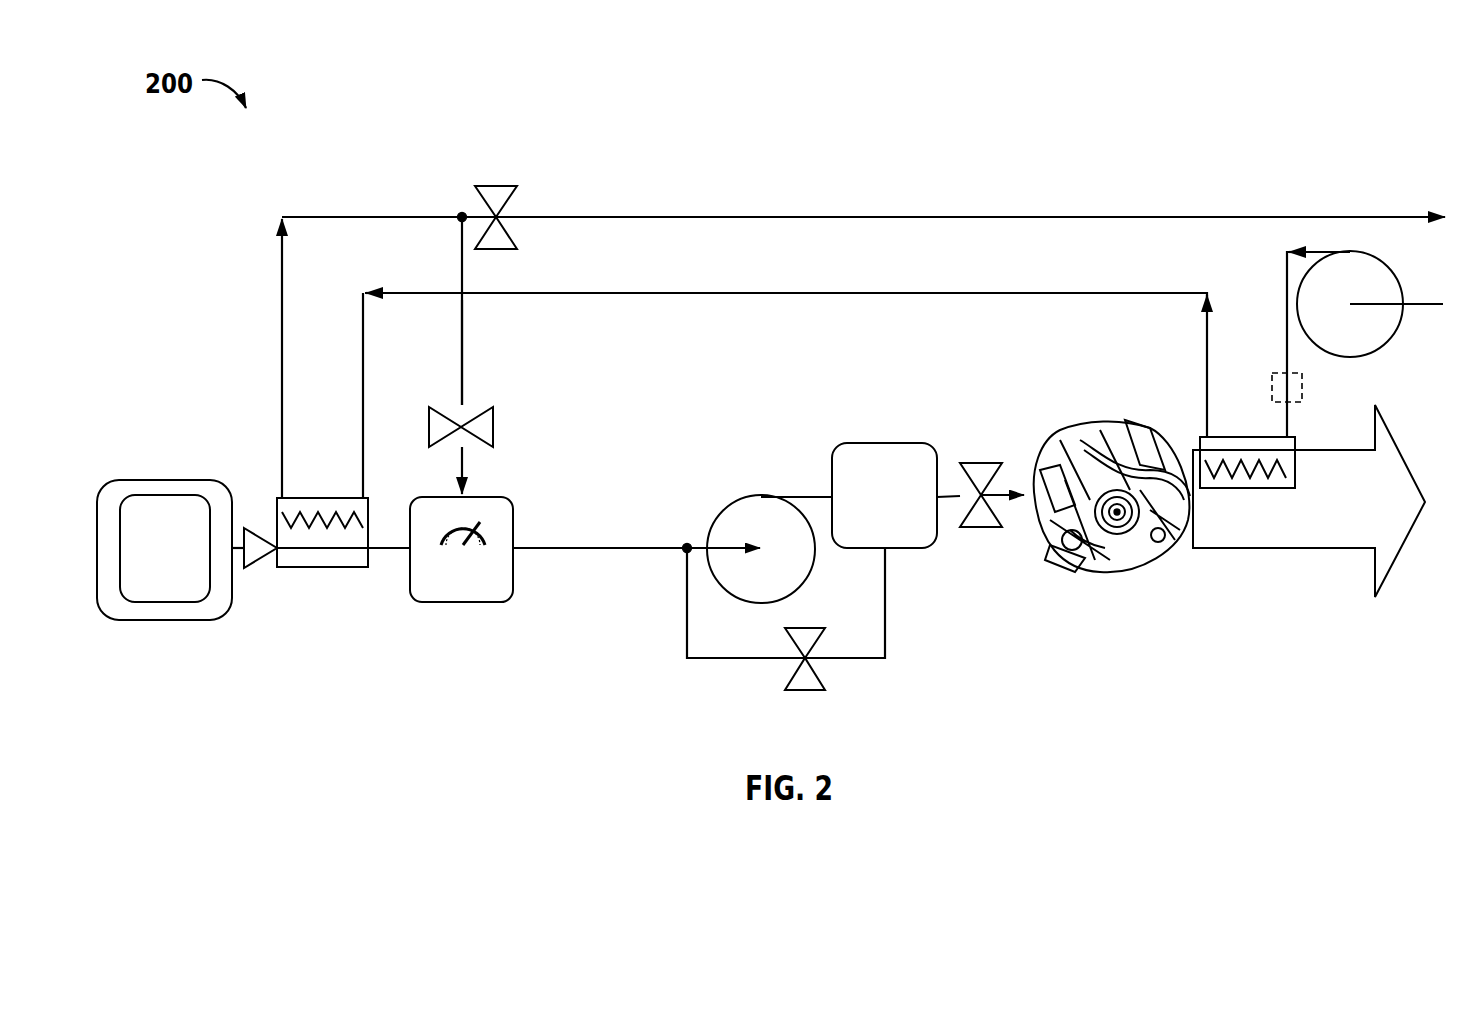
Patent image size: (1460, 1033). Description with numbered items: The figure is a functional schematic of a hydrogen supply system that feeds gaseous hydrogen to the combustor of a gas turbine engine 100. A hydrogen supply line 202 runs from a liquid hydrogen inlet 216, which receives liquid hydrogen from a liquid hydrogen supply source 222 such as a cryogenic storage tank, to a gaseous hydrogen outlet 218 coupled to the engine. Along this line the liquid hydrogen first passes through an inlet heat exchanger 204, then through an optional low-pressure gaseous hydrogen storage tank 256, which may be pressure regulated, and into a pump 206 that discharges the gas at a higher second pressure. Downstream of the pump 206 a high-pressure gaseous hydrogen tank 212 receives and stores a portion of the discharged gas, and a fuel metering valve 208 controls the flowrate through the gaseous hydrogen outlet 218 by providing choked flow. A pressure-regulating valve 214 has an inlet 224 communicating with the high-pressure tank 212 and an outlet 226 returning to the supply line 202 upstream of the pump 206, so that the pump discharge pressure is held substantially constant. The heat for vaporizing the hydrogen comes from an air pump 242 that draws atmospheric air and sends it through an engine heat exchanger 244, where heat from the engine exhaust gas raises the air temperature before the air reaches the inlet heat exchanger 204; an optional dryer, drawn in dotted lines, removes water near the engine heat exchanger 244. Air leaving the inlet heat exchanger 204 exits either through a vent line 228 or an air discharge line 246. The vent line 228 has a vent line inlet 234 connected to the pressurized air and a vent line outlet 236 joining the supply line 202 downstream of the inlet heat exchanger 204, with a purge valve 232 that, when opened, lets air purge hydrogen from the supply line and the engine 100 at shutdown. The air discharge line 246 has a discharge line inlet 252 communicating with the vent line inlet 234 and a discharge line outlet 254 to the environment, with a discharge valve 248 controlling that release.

The gas turbine engine 100 is at (1090, 406).
The hydrogen supply line 202 is at (600, 548).
The inlet heat exchanger 204 is at (322, 567).
The pump 206 is at (762, 497).
The fuel metering valve 208 is at (981, 463).
The high-pressure gaseous hydrogen tank 212 is at (883, 443).
The pressure-regulating valve 214 is at (815, 675).
The liquid hydrogen inlet 216 is at (237, 543).
The gaseous hydrogen outlet 218 is at (1000, 498).
The liquid hydrogen supply source 222 is at (160, 480).
The inlet 224 is at (867, 658).
The outlet 226 is at (770, 658).
The vent line 228 is at (462, 352).
The purge valve 232 is at (478, 410).
The vent line inlet 234 is at (462, 238).
The vent line outlet 236 is at (462, 470).
The air pump 242 is at (1358, 252).
The engine heat exchanger 244 is at (1262, 437).
The air discharge line 246 is at (752, 217).
The discharge valve 248 is at (496, 186).
The discharge line inlet 252 is at (314, 217).
The discharge line outlet 254 is at (1405, 217).
The low-pressure gaseous hydrogen storage tank 256 is at (446, 497).